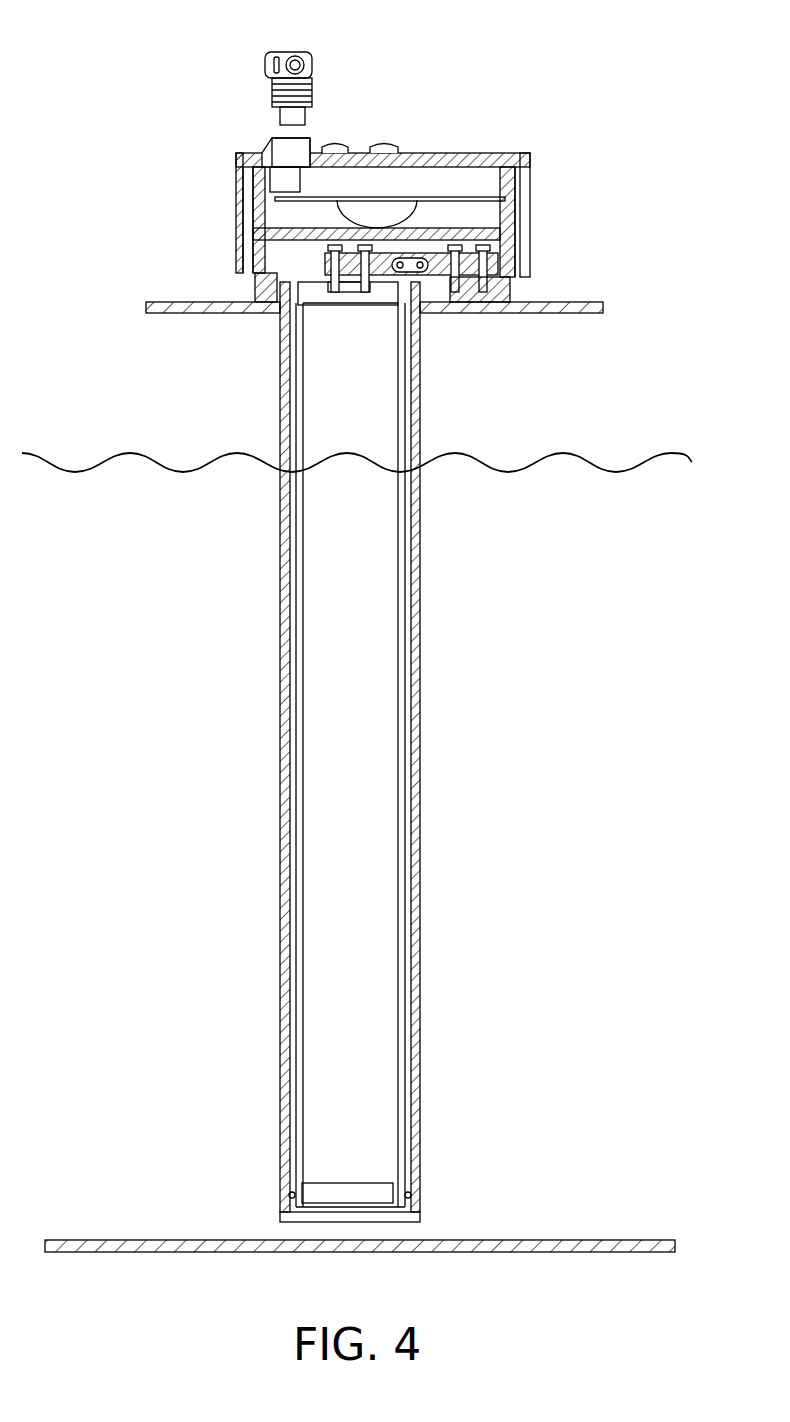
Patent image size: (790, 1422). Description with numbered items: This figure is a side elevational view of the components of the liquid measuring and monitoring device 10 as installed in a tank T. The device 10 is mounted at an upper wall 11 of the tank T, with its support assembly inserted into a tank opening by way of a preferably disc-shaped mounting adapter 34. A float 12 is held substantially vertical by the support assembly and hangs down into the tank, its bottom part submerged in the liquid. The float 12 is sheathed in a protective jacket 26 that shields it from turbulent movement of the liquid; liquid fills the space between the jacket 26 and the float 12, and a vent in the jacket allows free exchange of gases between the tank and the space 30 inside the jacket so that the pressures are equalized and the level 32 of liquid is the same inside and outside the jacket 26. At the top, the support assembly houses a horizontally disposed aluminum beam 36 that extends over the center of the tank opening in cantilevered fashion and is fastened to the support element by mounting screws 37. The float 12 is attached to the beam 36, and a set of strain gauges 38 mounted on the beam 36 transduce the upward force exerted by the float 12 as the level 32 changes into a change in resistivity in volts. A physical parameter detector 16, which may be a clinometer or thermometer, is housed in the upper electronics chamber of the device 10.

The liquid measuring and monitoring device 10 is at (495, 75).
The physical parameter detector 16 is at (400, 212).
The beam 36 is at (492, 262).
The strain gauges 38 is at (405, 255).
The mounting adapter 34 is at (262, 268).
The mounting screws 37 is at (480, 296).
The upper wall 11 is at (212, 310).
The tank T is at (600, 296).
The level 32 is at (112, 458).
The protective jacket 26 is at (282, 742).
The float 12 is at (300, 545).
The space 30 is at (408, 436).